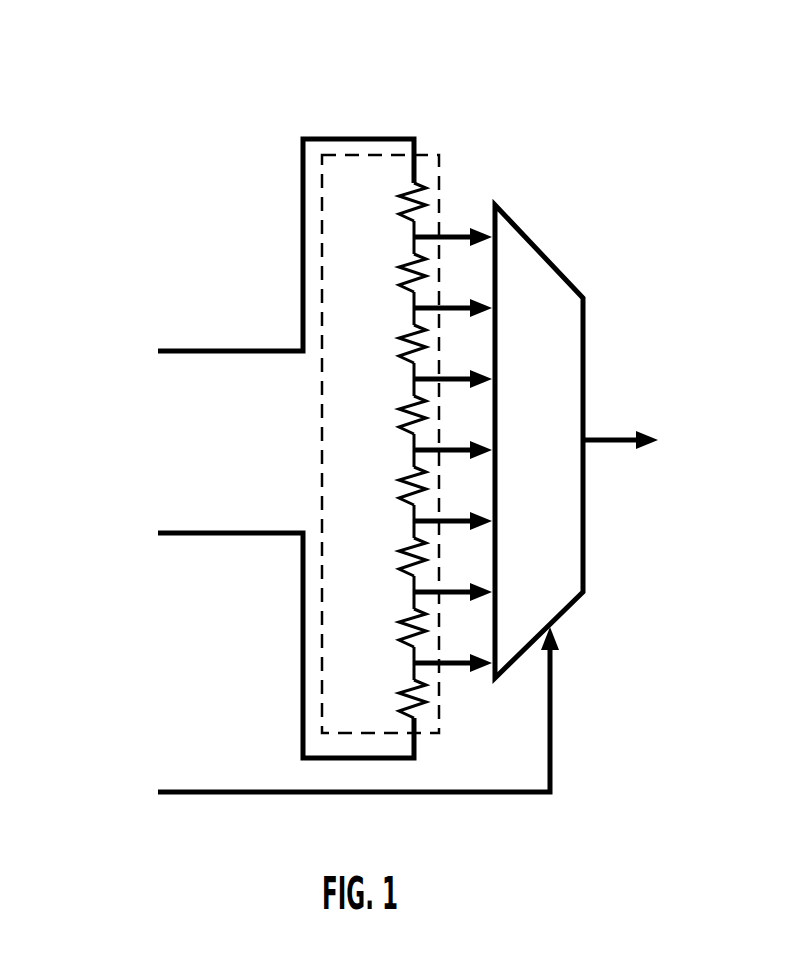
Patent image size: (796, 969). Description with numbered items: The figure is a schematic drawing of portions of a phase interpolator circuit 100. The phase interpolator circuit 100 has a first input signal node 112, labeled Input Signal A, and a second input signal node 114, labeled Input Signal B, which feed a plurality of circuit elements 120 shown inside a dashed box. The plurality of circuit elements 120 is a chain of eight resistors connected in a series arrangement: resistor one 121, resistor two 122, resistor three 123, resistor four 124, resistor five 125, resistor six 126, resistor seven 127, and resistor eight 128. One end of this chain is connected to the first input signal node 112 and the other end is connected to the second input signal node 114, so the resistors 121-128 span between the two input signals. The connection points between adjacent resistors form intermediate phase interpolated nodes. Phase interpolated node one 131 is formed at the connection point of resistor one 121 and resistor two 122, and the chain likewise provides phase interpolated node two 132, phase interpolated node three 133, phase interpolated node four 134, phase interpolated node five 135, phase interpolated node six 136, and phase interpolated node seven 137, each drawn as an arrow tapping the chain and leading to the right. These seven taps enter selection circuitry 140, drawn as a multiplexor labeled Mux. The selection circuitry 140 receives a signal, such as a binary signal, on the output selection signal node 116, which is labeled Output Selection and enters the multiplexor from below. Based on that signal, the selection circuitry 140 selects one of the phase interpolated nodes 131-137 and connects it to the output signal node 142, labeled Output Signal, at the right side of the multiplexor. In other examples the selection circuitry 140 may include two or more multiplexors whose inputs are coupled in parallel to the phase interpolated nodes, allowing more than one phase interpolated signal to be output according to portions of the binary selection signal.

The phase interpolator circuit 100 is at (508, 100).
The first input signal node 112 is at (233, 350).
The second input signal node 114 is at (233, 532).
The output selection signal node 116 is at (233, 791).
The plurality of circuit elements 120 is at (350, 155).
The resistor one 121 is at (413, 183).
The resistor two 122 is at (413, 256).
The resistor three 123 is at (413, 327).
The resistor four 124 is at (413, 398).
The resistor five 125 is at (413, 469).
The resistor six 126 is at (413, 540).
The resistor seven 127 is at (413, 611).
The resistor eight 128 is at (413, 682).
The phase interpolated node one 131 is at (413, 237).
The phase interpolated node two 132 is at (413, 308).
The phase interpolated node three 133 is at (413, 379).
The phase interpolated node four 134 is at (413, 450).
The phase interpolated node five 135 is at (413, 521).
The phase interpolated node six 136 is at (413, 592).
The phase interpolated node seven 137 is at (413, 663).
The selection circuitry 140 is at (540, 250).
The output signal node 142 is at (600, 440).